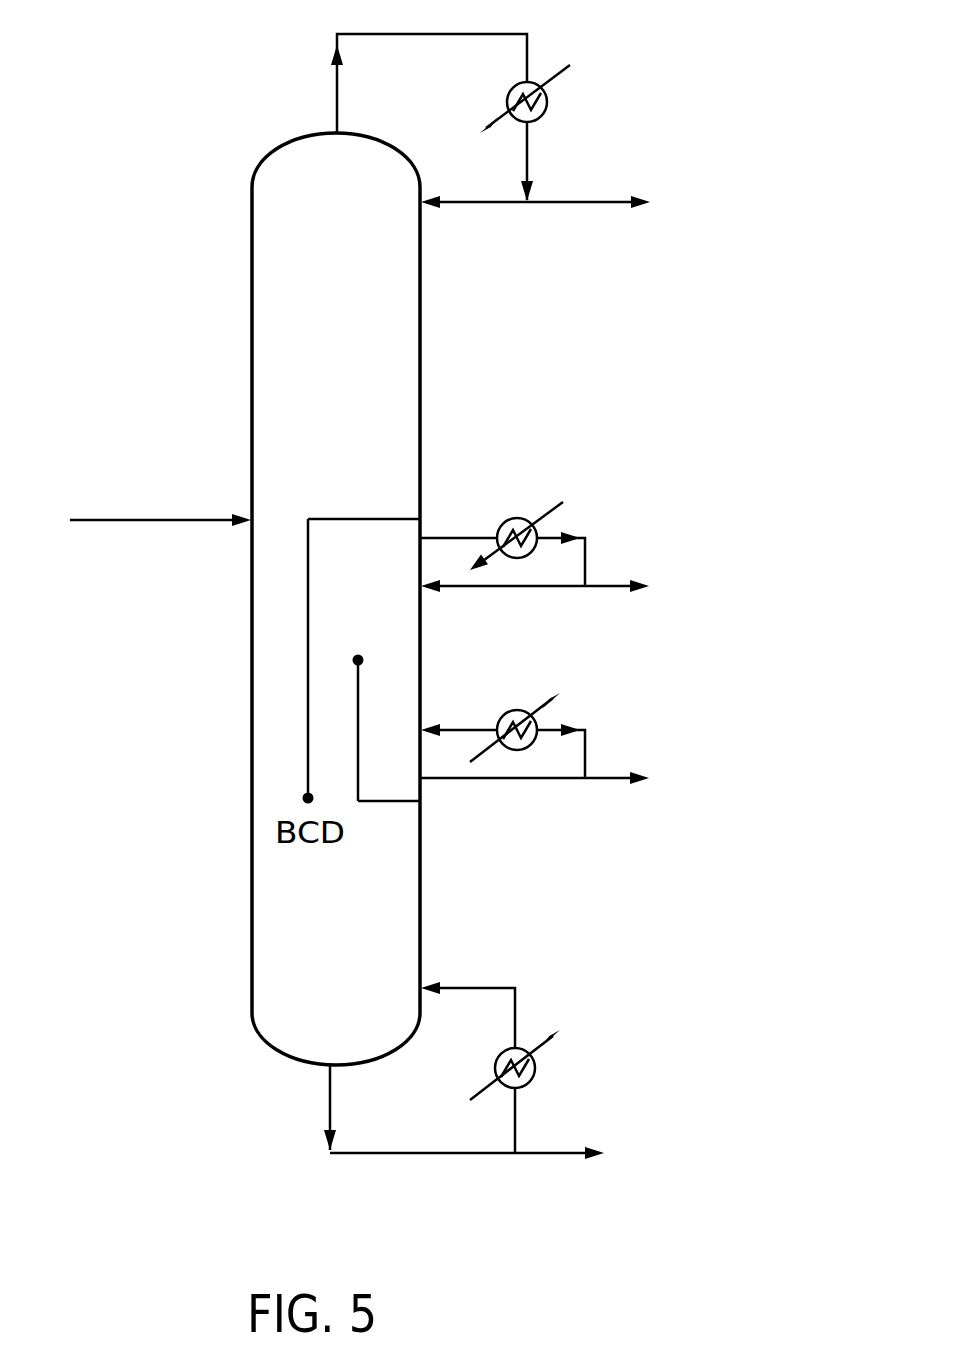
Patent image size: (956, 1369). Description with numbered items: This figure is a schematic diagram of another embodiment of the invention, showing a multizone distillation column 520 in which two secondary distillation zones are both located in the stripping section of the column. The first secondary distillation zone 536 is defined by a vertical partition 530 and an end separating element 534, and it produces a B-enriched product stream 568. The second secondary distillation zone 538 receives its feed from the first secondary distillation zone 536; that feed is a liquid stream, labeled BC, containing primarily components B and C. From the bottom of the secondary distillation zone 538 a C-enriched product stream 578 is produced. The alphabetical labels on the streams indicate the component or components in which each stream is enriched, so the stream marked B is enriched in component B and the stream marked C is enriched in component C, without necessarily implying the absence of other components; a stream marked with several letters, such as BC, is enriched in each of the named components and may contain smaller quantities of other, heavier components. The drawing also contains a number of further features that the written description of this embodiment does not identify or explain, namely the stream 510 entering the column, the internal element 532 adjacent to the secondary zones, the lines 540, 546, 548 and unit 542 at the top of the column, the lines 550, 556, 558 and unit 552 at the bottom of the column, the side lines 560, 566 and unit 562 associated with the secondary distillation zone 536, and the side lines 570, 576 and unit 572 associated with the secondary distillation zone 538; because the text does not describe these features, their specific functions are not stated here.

The feed stream ABCD 510 is at (170, 522).
The multizone distillation column 520 is at (252, 352).
The vertical partition 530 is at (308, 651).
The dividing wall 532 is at (356, 772).
The end separating element 534 is at (380, 518).
The secondary distillation zone 536 is at (386, 603).
The secondary distillation zone 538 is at (410, 720).
The overhead vapor line 540 is at (337, 103).
The condenser 542 is at (535, 80).
The reflux line 546 is at (485, 205).
The product A line 548 is at (574, 200).
The bottoms line 550 is at (330, 1100).
The reboiler 552 is at (536, 1080).
The reboiler return line 556 is at (474, 986).
The product D line 558 is at (535, 1156).
The side draw line 560 is at (455, 537).
The side heat exchanger 562 is at (520, 518).
The side return line 566 is at (538, 588).
The B-enriched product stream 568 is at (598, 590).
The side draw line 570 is at (470, 782).
The side heat exchanger 572 is at (518, 712).
The side return line 576 is at (466, 728).
The C-enriched product stream 578 is at (600, 782).